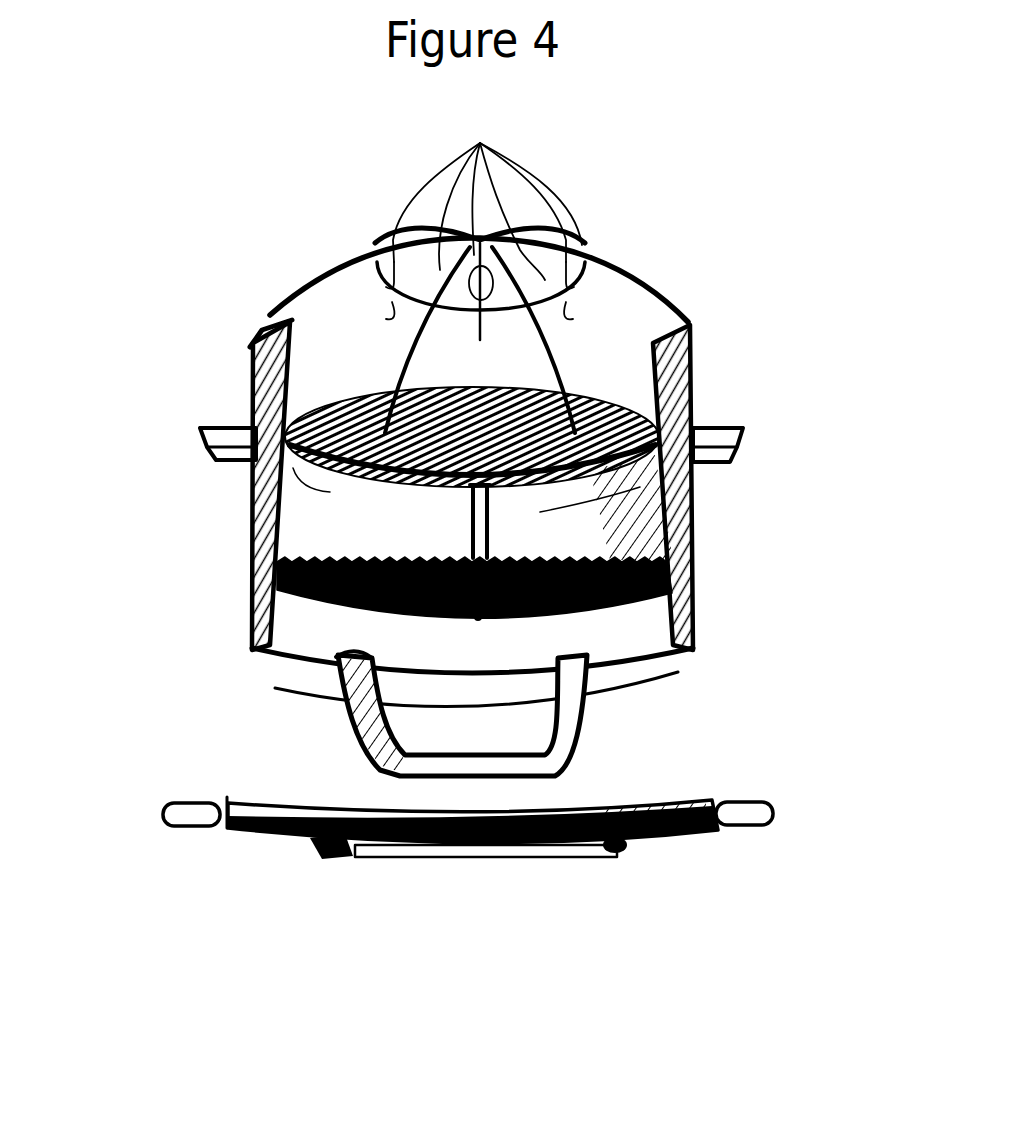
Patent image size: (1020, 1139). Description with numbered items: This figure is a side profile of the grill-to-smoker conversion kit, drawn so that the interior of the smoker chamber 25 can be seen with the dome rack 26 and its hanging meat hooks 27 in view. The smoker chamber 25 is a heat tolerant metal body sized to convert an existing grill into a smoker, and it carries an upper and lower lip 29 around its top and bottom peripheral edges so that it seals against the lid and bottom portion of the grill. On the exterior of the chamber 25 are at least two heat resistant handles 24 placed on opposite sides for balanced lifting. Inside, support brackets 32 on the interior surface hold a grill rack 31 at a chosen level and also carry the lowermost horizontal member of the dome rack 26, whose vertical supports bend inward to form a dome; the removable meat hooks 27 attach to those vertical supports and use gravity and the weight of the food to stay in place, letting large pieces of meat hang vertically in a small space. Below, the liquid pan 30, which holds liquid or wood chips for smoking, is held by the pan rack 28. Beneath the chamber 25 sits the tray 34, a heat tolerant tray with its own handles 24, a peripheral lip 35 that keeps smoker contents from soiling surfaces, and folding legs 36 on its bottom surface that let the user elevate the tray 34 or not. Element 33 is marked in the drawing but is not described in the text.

The heat resistant handles 24 is at (162, 812).
The smoker chamber 25 is at (250, 390).
The dome rack 26 is at (623, 275).
The meat hooks 27 is at (484, 211).
The pan rack 28 is at (282, 683).
The upper and lower lip 29 is at (262, 657).
The pan 30 is at (365, 750).
The grill rack 31 is at (247, 573).
The support brackets 32 is at (483, 490).
The wall top cap 33 is at (258, 345).
The tray 34 is at (680, 833).
The lip 35 is at (262, 837).
The folding legs 36 is at (430, 857).